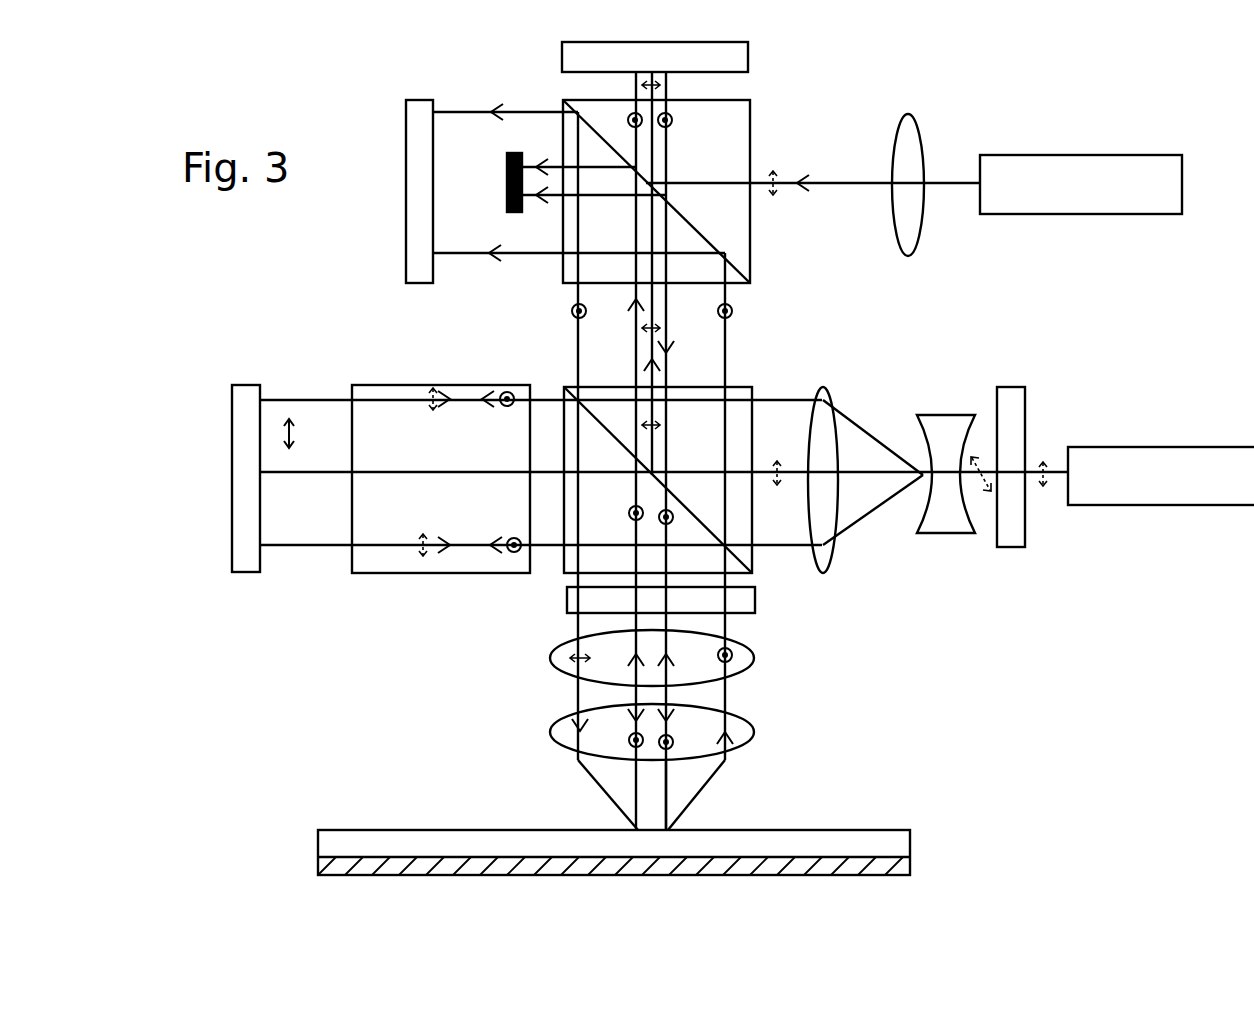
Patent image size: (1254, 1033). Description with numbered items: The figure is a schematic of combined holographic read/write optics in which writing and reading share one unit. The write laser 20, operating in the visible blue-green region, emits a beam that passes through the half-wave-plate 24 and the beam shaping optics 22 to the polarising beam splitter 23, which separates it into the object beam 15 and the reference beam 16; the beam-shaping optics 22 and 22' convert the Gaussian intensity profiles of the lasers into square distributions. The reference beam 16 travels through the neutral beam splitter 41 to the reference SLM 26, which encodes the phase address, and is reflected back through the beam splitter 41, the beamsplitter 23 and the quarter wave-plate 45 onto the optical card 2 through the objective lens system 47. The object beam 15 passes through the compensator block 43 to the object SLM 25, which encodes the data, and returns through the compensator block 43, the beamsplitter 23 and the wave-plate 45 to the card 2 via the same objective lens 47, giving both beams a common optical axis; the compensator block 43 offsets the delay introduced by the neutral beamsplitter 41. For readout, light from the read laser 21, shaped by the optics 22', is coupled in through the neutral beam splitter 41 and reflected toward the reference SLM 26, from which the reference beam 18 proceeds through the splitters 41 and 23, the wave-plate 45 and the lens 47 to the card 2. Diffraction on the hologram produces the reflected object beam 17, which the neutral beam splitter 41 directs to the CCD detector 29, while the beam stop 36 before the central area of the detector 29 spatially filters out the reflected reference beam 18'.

The optical card 2 is at (847, 850).
The object beam 15 is at (308, 548).
The reference beam 16 is at (637, 778).
The reflected object beam 17 is at (468, 112).
The reference beam 18 is at (784, 795).
The reflected beam component 18' is at (579, 254).
The write laser 20 is at (1161, 476).
The read laser 21 is at (914, 184).
The beam shaping optics 22 is at (891, 511).
The beam-shaping optics 22' is at (910, 224).
The polarising beam splitter 23 is at (748, 387).
The half-wave-plate 24 is at (1010, 532).
The object SLM 25 is at (240, 485).
The reference SLM 26 is at (576, 58).
The CCD detector 29 is at (418, 238).
The beam stop 36 is at (503, 175).
The neutral beam splitter 41 is at (725, 143).
The compensator block 43 is at (402, 558).
The quarter wave-plate 45 is at (747, 600).
The objective lens system 47 is at (750, 673).